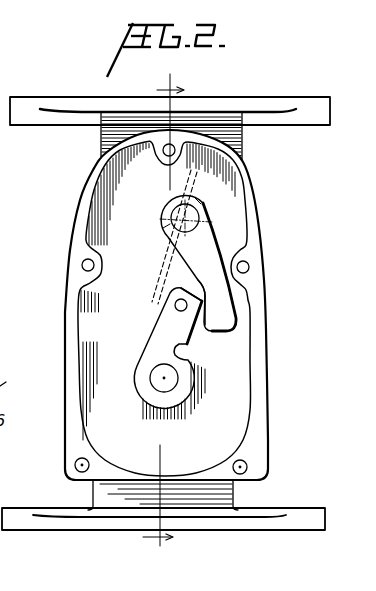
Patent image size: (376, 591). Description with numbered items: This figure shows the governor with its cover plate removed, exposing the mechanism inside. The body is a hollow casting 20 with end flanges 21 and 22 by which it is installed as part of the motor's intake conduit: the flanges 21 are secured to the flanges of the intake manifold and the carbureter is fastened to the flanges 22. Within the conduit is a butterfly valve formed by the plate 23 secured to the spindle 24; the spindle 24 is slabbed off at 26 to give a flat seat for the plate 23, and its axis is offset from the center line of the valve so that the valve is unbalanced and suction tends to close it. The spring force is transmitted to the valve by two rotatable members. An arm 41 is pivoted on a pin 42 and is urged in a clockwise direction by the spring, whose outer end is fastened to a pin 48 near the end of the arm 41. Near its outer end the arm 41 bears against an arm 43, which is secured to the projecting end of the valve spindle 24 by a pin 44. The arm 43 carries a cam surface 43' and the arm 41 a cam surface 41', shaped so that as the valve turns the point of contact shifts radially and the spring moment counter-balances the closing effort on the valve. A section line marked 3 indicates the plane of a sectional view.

The section line 3- 3 is at (163, 312).
The hollow casting 20 is at (106, 138).
The end flange 21 is at (268, 110).
The end flange 22 is at (113, 525).
The plate 23 is at (158, 273).
The spindle 24 is at (212, 223).
The slabbed off portion 26 is at (202, 204).
The arm 41 is at (155, 353).
The cam surface 41' is at (161, 309).
The pin 42 is at (160, 378).
The arm 43 is at (237, 263).
The cam surface 43' is at (256, 302).
The pin 44 is at (167, 226).
The pin 48 is at (183, 309).